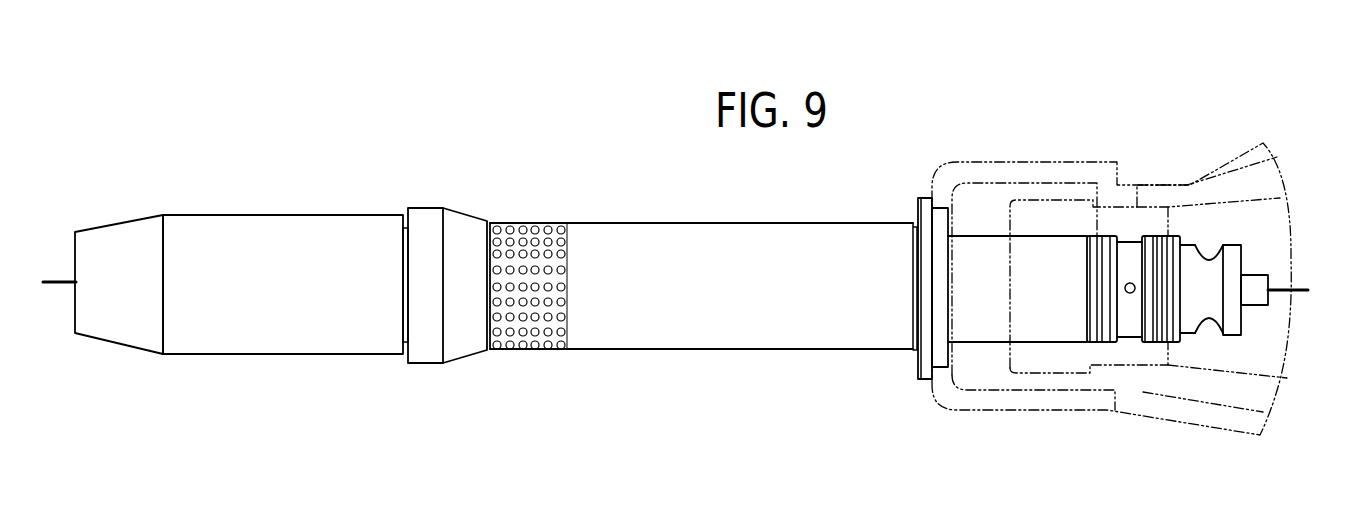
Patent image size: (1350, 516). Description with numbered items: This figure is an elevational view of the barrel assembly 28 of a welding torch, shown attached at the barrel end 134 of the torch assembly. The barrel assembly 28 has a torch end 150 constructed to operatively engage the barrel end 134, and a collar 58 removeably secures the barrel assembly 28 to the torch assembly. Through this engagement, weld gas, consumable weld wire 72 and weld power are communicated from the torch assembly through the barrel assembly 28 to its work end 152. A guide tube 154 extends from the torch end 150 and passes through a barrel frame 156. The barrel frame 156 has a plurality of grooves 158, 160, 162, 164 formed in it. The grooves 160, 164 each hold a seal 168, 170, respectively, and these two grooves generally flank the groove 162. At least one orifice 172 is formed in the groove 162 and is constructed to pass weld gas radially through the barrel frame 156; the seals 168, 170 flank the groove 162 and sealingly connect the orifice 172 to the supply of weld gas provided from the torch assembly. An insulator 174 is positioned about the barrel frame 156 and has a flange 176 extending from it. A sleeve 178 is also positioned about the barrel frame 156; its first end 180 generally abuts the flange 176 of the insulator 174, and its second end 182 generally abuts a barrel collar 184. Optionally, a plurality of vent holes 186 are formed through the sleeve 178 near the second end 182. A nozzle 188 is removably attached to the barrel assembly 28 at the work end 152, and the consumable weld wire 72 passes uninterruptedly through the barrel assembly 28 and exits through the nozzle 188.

The barrel assembly 28 is at (632, 158).
The collar 58 is at (1025, 163).
The consumable weld wire 72 is at (53, 281).
The barrel end 134 is at (1038, 420).
The torch end 150 is at (1170, 101).
The work end 152 is at (100, 155).
The guide tube 154 is at (1260, 282).
The barrel frame 156 is at (1185, 248).
The groove 158 is at (1213, 313).
The groove 160 is at (1158, 350).
The groove 162 is at (1130, 342).
The groove 164 is at (1103, 350).
The seal 168 is at (1155, 236).
The seal 170 is at (1105, 234).
The orifice 172 is at (1125, 288).
The insulator 174 is at (988, 243).
The flange 176 is at (923, 198).
The sleeve 178 is at (772, 245).
The first end 180 is at (887, 260).
The second end 182 is at (489, 211).
The barrel collar 184 is at (422, 218).
The vent holes 186 is at (530, 355).
The nozzle 188 is at (253, 232).